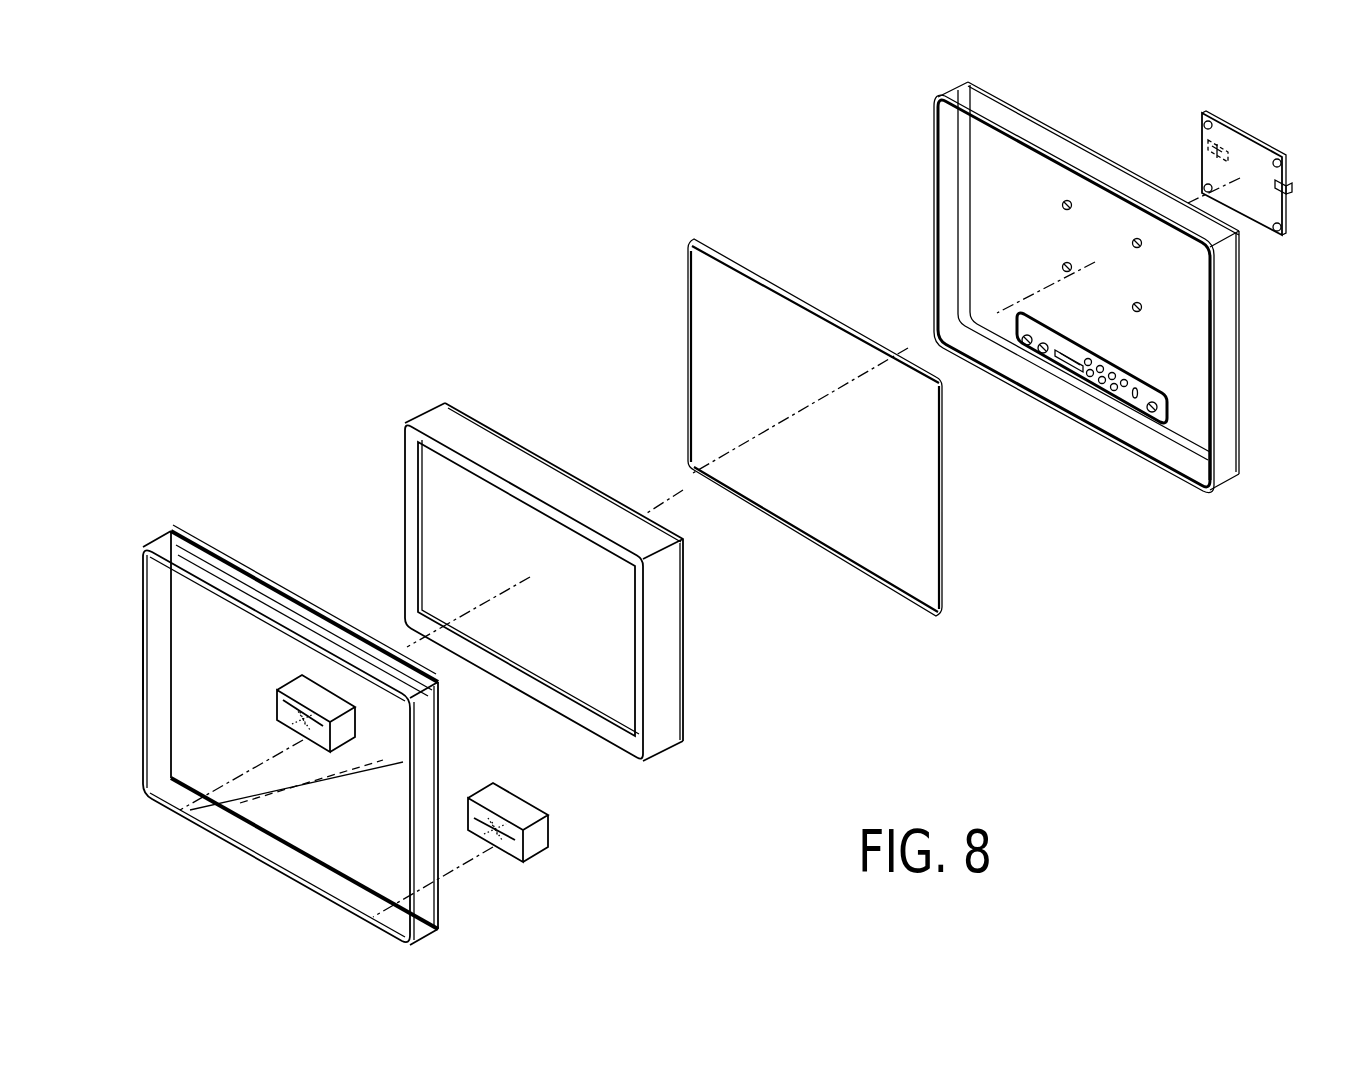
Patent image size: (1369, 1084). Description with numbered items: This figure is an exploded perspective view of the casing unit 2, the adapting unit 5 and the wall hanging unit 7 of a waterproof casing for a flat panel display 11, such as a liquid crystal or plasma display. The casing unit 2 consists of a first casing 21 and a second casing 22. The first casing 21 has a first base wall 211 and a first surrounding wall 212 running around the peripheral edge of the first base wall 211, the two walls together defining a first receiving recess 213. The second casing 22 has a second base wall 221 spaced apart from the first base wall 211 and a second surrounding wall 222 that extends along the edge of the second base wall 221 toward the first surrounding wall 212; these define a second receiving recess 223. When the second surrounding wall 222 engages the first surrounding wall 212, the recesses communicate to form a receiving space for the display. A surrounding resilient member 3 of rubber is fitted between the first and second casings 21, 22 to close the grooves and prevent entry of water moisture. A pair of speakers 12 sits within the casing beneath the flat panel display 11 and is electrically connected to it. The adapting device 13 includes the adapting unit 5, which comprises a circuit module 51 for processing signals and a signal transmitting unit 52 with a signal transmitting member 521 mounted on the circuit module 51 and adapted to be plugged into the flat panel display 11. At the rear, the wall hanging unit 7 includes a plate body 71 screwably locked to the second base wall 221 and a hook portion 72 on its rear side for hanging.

The casing unit 2 is at (117, 425).
The first casing 21 is at (138, 527).
The first base wall 211 is at (153, 637).
The first surrounding wall 212 is at (205, 553).
The first receiving recess 213 is at (285, 578).
The second casing 22 is at (910, 128).
The second base wall 221 is at (985, 163).
The second surrounding wall 222 is at (945, 215).
The second receiving recess 223 is at (1195, 410).
The flat panel display 11 is at (468, 425).
The speakers 12 is at (295, 686).
The surrounding resilient member 3 is at (680, 237).
The adapting unit 5 is at (1050, 500).
The circuit module 51 is at (1027, 345).
The signal transmitting unit 52 is at (1030, 330).
The signal transmitting member 521 is at (1135, 414).
The adapting device 13 is at (1048, 605).
The wall hanging unit 7 is at (1255, 125).
The plate body 71 is at (1235, 130).
The hook portion 72 is at (1232, 150).